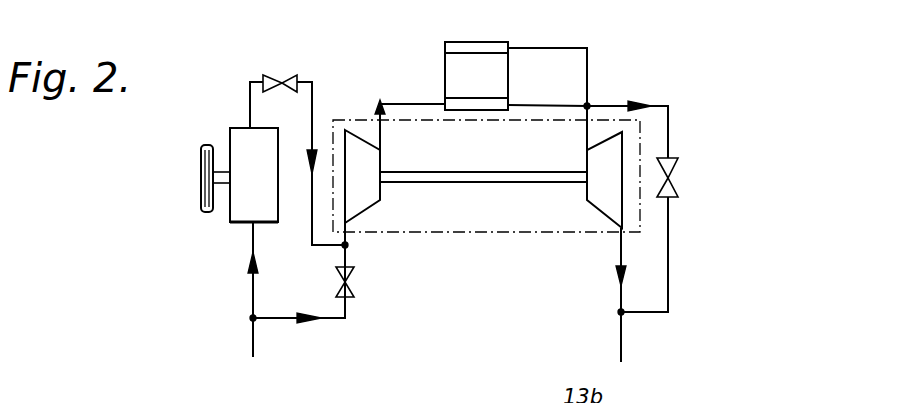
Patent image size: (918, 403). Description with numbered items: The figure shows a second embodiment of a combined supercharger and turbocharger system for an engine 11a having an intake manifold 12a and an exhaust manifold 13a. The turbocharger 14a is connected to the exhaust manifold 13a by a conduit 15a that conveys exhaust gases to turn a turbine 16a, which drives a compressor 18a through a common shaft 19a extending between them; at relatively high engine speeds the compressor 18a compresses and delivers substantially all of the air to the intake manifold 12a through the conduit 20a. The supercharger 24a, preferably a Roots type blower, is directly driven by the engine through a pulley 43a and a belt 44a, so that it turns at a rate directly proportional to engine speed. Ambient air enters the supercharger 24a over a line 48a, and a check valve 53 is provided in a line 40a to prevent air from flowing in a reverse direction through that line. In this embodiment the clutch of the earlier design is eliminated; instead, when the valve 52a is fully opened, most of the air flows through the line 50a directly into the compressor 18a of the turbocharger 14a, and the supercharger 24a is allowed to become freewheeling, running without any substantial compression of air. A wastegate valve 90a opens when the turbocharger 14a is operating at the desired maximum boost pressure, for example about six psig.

The engine 11a is at (509, 78).
The intake manifold 12a is at (509, 104).
The exhaust manifold 13a is at (492, 42).
The turbocharger 14a is at (475, 232).
The conduit 15a is at (590, 67).
The turbine 16a is at (592, 205).
The compressor 18a is at (378, 206).
The common shaft 19a is at (522, 150).
The conduit 20a is at (400, 104).
The supercharger 24a is at (230, 222).
The line 40a is at (314, 96).
The pulley 43a is at (200, 170).
The belt 44a is at (205, 145).
The line 48a is at (252, 337).
The line 50a is at (335, 318).
The valve 52a is at (356, 282).
The check valve 53 is at (305, 52).
The wastegate valve 90a is at (680, 180).